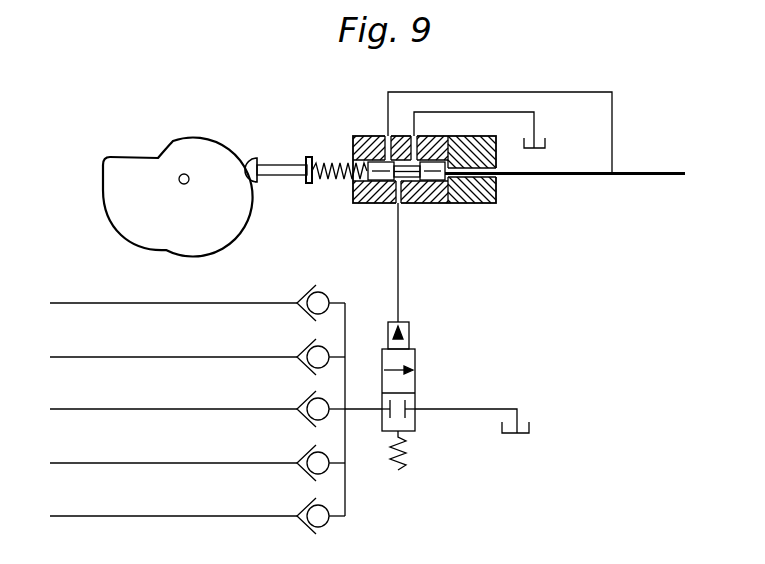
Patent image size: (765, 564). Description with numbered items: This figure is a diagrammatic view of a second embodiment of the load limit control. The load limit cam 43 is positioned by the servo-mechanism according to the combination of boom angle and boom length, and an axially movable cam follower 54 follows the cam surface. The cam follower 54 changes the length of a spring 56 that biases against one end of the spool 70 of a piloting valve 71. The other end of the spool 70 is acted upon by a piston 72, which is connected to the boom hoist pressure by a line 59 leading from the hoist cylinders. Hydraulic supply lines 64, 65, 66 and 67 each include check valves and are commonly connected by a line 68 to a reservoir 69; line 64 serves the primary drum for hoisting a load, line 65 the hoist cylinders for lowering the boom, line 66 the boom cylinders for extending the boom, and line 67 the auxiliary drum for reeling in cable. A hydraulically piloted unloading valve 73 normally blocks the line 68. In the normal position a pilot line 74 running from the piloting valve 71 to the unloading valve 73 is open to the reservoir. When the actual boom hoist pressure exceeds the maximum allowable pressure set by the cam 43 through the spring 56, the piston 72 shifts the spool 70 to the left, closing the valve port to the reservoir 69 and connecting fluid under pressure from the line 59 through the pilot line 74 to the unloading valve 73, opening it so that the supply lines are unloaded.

The load limit cam 43 is at (190, 137).
The cam follower 54 is at (256, 158).
The spring 56 is at (350, 167).
The line 59 is at (571, 92).
The hydraulic supply line 64 is at (214, 357).
The hydraulic supply line 65 is at (240, 409).
The hydraulic supply line 66 is at (235, 463).
The hydraulic supply line 67 is at (240, 516).
The line 68 is at (364, 412).
The reservoir 69 is at (547, 144).
The spool 70 is at (378, 204).
The piloting valve 71 is at (440, 204).
The piston 72 is at (498, 194).
The hydraulically piloted unloading valve 73 is at (417, 353).
The pilot line 74 is at (400, 287).